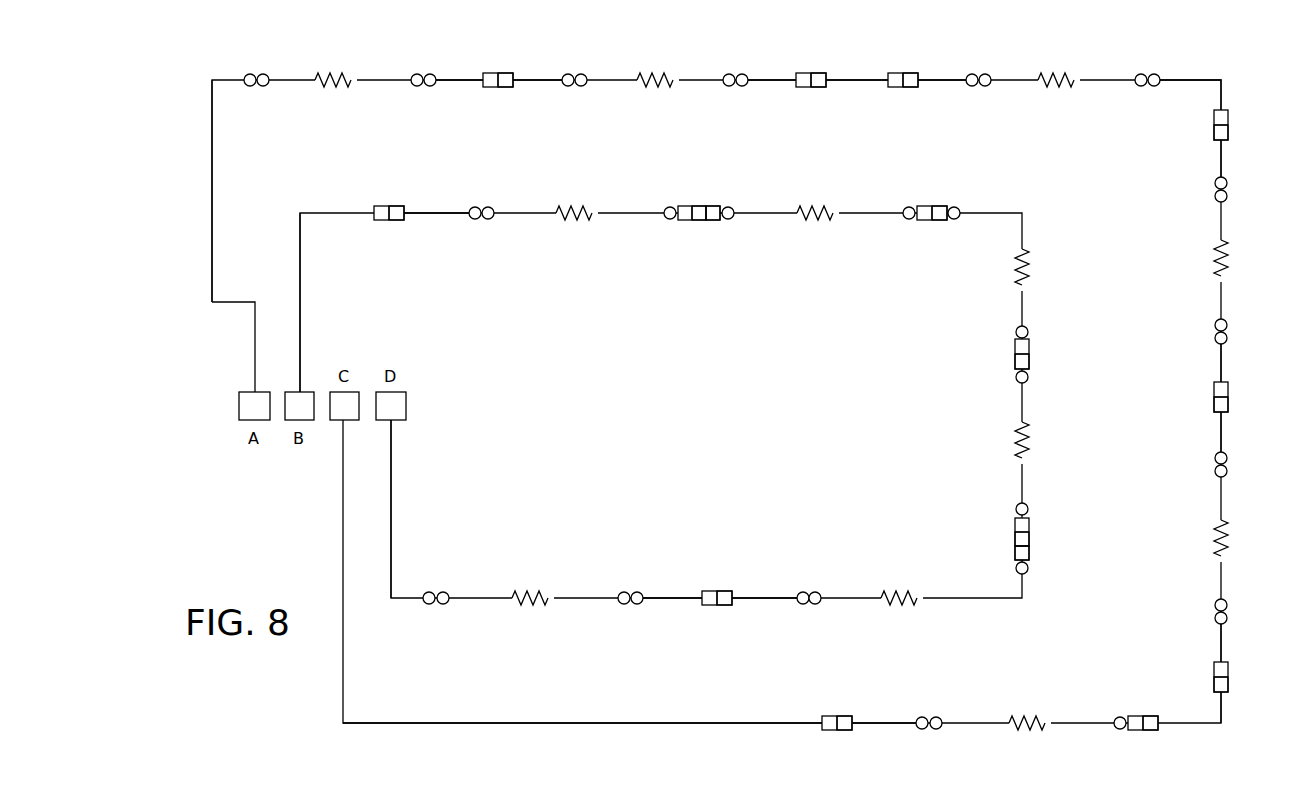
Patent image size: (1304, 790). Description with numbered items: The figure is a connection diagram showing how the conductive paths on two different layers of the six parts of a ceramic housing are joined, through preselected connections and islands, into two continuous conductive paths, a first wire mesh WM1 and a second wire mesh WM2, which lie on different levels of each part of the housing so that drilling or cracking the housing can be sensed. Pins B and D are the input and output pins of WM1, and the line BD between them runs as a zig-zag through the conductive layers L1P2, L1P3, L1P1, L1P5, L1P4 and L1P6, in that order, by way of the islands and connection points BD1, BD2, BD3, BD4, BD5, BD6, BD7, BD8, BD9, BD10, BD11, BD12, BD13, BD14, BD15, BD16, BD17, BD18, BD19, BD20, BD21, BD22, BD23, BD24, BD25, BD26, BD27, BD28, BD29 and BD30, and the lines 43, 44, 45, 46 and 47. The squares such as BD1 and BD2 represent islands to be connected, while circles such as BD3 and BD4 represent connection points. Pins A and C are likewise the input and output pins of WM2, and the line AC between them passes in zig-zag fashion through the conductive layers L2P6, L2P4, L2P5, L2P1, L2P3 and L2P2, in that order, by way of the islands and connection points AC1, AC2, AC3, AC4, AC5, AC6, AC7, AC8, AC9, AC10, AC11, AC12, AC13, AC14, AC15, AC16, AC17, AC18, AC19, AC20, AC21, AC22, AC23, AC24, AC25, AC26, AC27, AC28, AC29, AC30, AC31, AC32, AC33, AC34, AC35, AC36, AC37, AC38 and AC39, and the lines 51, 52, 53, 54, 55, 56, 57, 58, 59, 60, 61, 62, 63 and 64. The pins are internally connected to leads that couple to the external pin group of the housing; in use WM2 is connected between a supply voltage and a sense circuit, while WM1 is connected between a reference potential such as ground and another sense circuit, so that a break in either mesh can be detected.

The line 43 is at (312, 215).
The line 44 is at (448, 212).
The line 45 is at (778, 597).
The line 46 is at (657, 597).
The line 47 is at (392, 473).
The line 51 is at (211, 217).
The line 52 is at (450, 79).
The line 53 is at (548, 82).
The line 54 is at (759, 79).
The line 55 is at (873, 82).
The line 56 is at (950, 82).
The line 57 is at (1208, 80).
The line 58 is at (1223, 160).
The line 59 is at (1223, 367).
The line 60 is at (1223, 432).
The line 61 is at (1222, 645).
The line 62 is at (1218, 717).
The line 63 is at (900, 722).
The line 64 is at (625, 722).
The connection point AC1 is at (250, 74).
The connection point AC2 is at (263, 86).
The connection point AC3 is at (417, 86).
The connection point AC4 is at (430, 86).
The island AC5 is at (493, 73).
The island AC6 is at (505, 87).
The connection point AC7 is at (568, 74).
The connection point AC8 is at (581, 86).
The connection point AC9 is at (729, 86).
The connection point AC10 is at (742, 86).
The island AC11 is at (802, 73).
The island AC12 is at (818, 87).
The island AC13 is at (893, 73).
The island AC14 is at (908, 87).
The connection point AC15 is at (972, 74).
The connection point AC16 is at (986, 86).
The connection point AC17 is at (1141, 86).
The connection point AC18 is at (1153, 74).
The island AC19 is at (1228, 118).
The island AC20 is at (1213, 138).
The connection point AC21 is at (1228, 182).
The connection point AC22 is at (1215, 196).
The connection point AC23 is at (1227, 325).
The connection point AC24 is at (1215, 338).
The island AC25 is at (1228, 389).
The island AC26 is at (1213, 403).
The connection point AC27 is at (1228, 458).
The connection point AC28 is at (1215, 472).
The connection point AC29 is at (1227, 605).
The connection point AC30 is at (1215, 617).
The island AC31 is at (1227, 670).
The island AC32 is at (1223, 685).
The island AC33 is at (1152, 731).
The island AC34 is at (1136, 731).
The connection point AC35 is at (1118, 718).
The connection point AC36 is at (937, 730).
The connection point AC37 is at (921, 730).
The island AC38 is at (846, 716).
The island AC39 is at (828, 716).
The island BD1 is at (383, 206).
The island BD2 is at (397, 206).
The connection point BD3 is at (474, 219).
The connection point BD4 is at (489, 219).
The connection point BD5 is at (667, 220).
The island BD6 is at (687, 206).
The island BD7 is at (698, 222).
The island BD8 is at (713, 206).
The connection point BD9 is at (730, 219).
The connection point BD10 is at (906, 218).
The island BD11 is at (923, 220).
The island BD12 is at (937, 206).
The connection point BD13 is at (958, 208).
The connection point BD14 is at (1028, 332).
The island BD15 is at (1014, 344).
The island BD16 is at (1030, 359).
The connection point BD17 is at (1015, 377).
The connection point BD18 is at (1028, 507).
The island BD19 is at (1014, 519).
The island BD20 is at (1030, 539).
The island BD21 is at (1014, 553).
The connection point BD22 is at (1029, 571).
The connection point BD23 is at (816, 604).
The connection point BD24 is at (802, 604).
The island BD25 is at (723, 591).
The island BD26 is at (710, 591).
The connection point BD27 is at (637, 604).
The connection point BD28 is at (624, 604).
The connection point BD29 is at (443, 604).
The connection point BD30 is at (429, 604).
The conductive layer L1P1 is at (1046, 270).
The conductive layer L1P2 is at (576, 202).
The conductive layer L1P3 is at (818, 202).
The conductive layer L1P4 is at (900, 588).
The conductive layer L1P5 is at (1046, 443).
The conductive layer L1P6 is at (532, 588).
The conductive layer L2P1 is at (1246, 261).
The conductive layer L2P2 is at (1029, 713).
The conductive layer L2P3 is at (1246, 541).
The conductive layer L2P4 is at (658, 70).
The conductive layer L2P5 is at (1058, 70).
The conductive layer L2P6 is at (334, 70).
The first continuous conductive path (wire mesh 1) WM1 is at (897, 362).
The second continuous conductive path (wire mesh 2) WM2 is at (1162, 387).